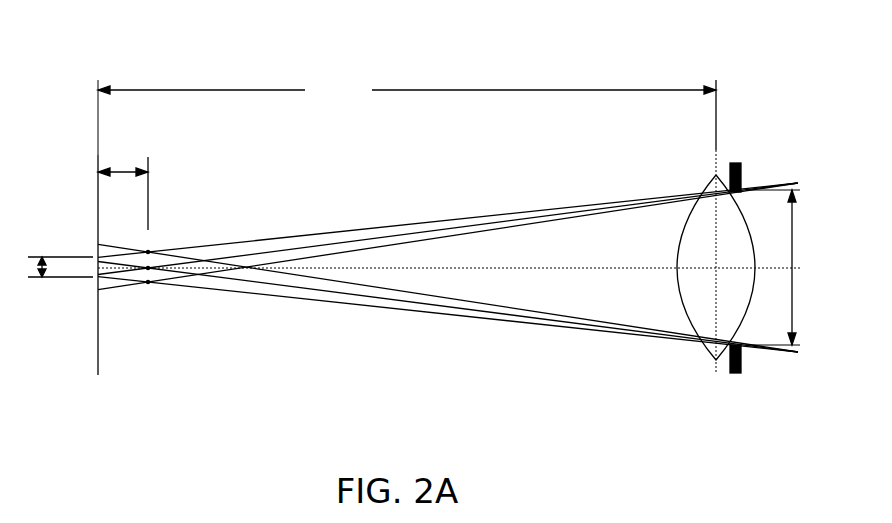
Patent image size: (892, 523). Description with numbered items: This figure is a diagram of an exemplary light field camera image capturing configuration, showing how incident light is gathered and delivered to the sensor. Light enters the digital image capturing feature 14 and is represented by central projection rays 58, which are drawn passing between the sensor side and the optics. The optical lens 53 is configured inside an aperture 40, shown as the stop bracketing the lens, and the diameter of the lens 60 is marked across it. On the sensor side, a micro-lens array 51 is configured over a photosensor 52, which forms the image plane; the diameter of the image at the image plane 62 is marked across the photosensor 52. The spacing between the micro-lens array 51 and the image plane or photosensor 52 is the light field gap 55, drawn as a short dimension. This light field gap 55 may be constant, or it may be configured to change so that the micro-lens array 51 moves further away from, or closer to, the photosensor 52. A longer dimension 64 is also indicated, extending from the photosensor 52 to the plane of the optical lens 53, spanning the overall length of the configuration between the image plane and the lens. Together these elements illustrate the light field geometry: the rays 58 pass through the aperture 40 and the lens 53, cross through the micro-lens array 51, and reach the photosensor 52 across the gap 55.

The digital image capturing feature 14 is at (241, 76).
The aperture 40 is at (734, 374).
The micro-lens array 51 is at (149, 284).
The photosensor 52 is at (93, 223).
The lens 53 is at (700, 297).
The light field gap 55 is at (117, 162).
The central projection rays 58 is at (468, 313).
The diameter of the lens 60 is at (793, 243).
The diameter of the image at the image plane 62 is at (43, 279).
The distance between source and lens 64 is at (407, 113).